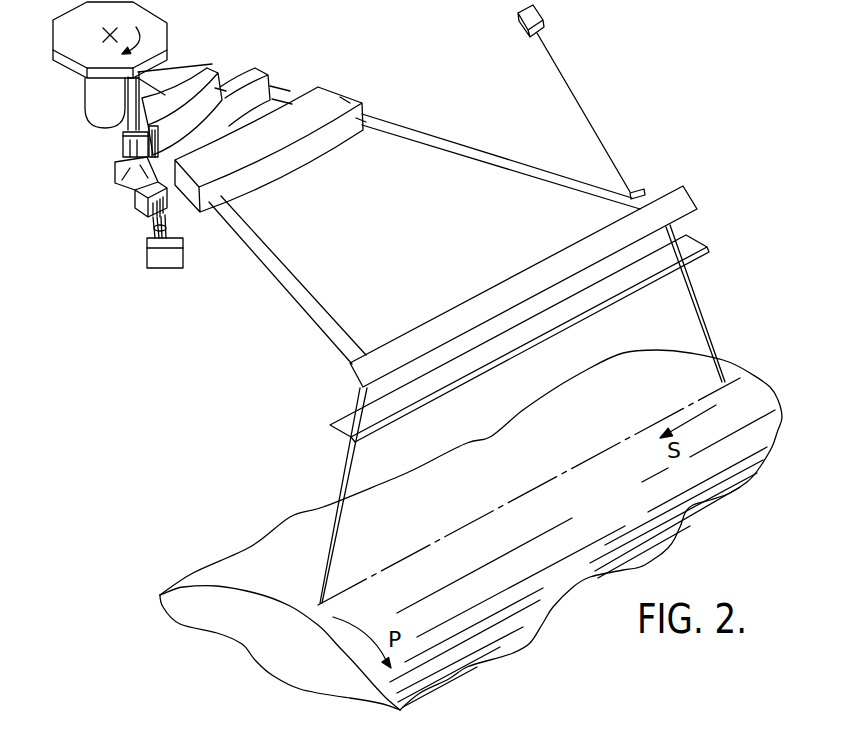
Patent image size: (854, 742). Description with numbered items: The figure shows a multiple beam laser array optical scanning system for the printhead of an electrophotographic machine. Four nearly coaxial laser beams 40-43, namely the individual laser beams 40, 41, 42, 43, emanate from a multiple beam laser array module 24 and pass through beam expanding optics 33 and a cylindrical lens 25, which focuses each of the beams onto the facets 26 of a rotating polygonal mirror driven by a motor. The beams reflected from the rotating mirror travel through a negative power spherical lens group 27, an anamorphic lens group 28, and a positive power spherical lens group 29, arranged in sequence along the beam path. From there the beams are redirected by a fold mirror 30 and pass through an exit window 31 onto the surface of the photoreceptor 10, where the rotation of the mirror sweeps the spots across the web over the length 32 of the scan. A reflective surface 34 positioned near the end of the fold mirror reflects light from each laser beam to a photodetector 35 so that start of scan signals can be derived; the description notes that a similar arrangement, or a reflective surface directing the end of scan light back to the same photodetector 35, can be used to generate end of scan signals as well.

The photoreceptor 10 is at (525, 607).
The multiple beam laser array module 24 is at (165, 260).
The cylindrical lens 25 is at (123, 140).
The facets of rotating polygonal mirror 26 is at (167, 57).
The negative power spherical lens group 27 is at (210, 68).
The anamorphic lens group 28 is at (252, 72).
The positive power spherical lens group 29 is at (343, 102).
The fold mirror 30 is at (683, 186).
The exit window 31 is at (692, 238).
The length of the scan 32 is at (572, 468).
The beam expanding optics 33 is at (134, 228).
The reflective surface 34 is at (636, 190).
The photodetector 35 is at (545, 16).
The laser beams 40-43 is at (96, 244).
The laser beam 40 is at (154, 227).
The laser beam 41 is at (158, 227).
The laser beam 42 is at (161, 227).
The laser beam 43 is at (157, 227).